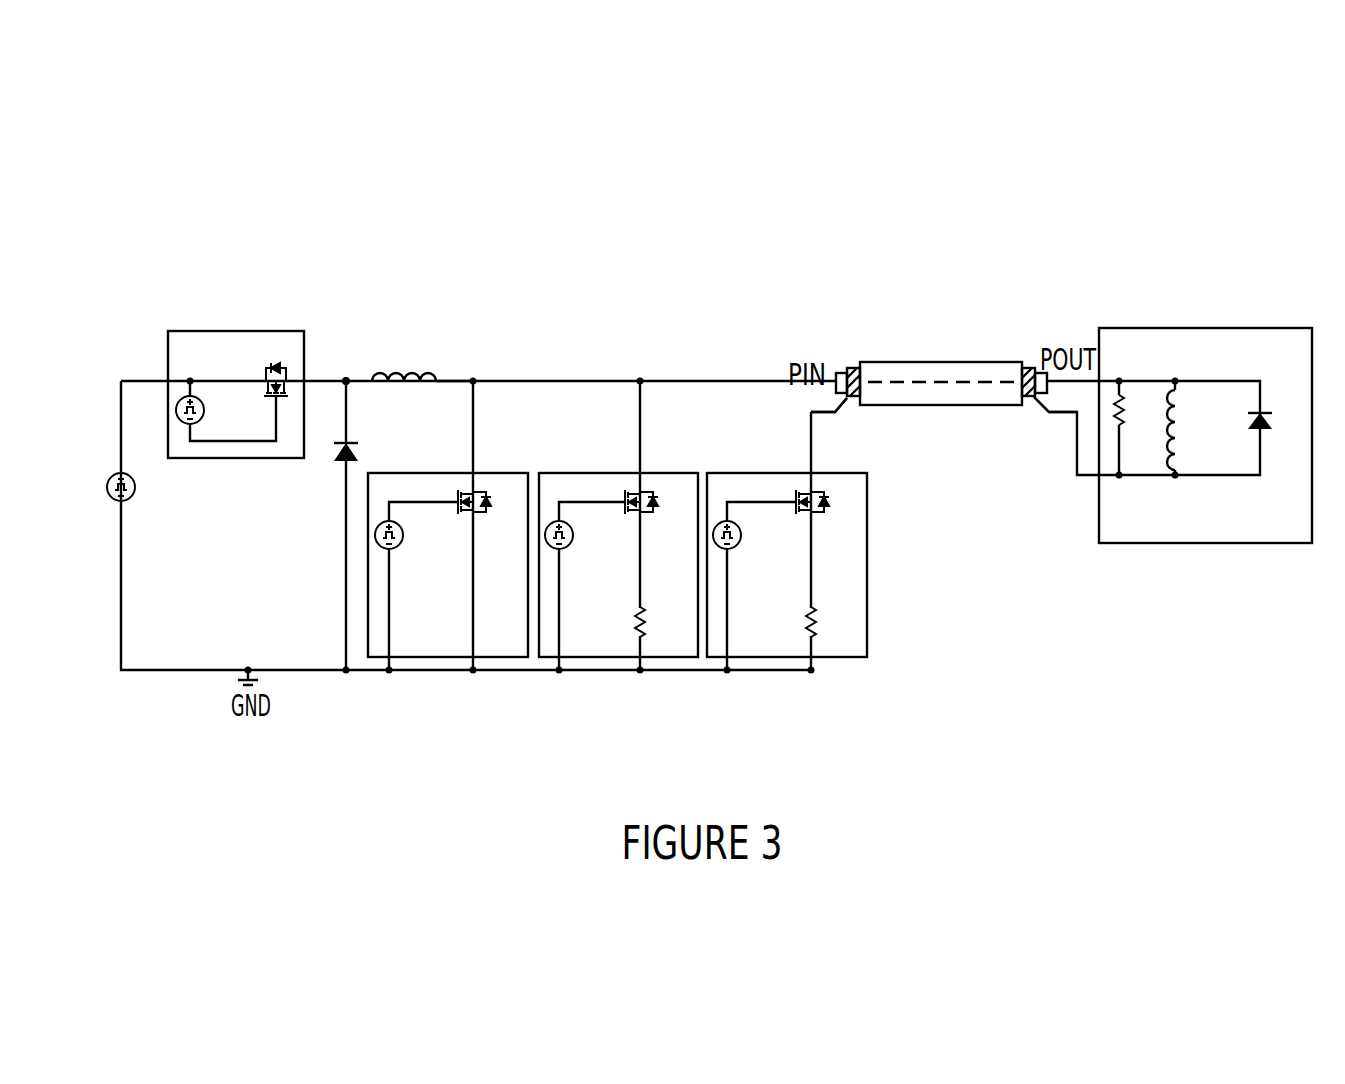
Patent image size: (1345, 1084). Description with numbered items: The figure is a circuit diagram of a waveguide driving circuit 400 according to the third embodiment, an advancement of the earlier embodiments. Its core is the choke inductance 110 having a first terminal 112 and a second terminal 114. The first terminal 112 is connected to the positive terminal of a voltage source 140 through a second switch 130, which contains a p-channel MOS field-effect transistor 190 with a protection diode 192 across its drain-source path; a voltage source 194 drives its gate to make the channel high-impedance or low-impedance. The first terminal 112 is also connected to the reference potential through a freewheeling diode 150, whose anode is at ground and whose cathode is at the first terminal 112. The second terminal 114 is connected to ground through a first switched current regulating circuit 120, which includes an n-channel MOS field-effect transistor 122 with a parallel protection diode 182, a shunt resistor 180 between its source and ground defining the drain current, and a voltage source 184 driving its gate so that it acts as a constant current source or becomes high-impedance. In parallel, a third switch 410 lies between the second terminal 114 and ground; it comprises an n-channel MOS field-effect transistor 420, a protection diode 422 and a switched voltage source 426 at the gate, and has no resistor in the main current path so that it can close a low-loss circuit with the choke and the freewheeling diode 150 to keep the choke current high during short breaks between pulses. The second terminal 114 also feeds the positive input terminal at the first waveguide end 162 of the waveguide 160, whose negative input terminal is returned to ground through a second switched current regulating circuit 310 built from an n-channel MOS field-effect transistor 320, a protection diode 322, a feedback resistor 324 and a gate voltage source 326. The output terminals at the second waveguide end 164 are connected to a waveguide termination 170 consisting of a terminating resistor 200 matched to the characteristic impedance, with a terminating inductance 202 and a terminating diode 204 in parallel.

The waveguide driving circuit 400 is at (523, 285).
The second switch 130 is at (190, 330).
The p-channel MOS field-effect transistor 190 is at (262, 387).
The protection diode 192 is at (282, 360).
The voltage source 194 is at (180, 404).
The first terminal 112 is at (347, 376).
The inductance 110 is at (410, 372).
The second terminal 114 is at (447, 378).
The voltage source 140 is at (106, 486).
The freewheeling diode 150 is at (325, 459).
The third switch 410 is at (442, 658).
The n-channel MOS field-effect transistor 420 is at (458, 492).
The protection diode 422 is at (484, 492).
The switched voltage source 426 is at (392, 550).
The first switched current regulating circuit 120 is at (606, 658).
The n-channel MOS field-effect transistor 122 is at (624, 493).
The protection diode 182 is at (651, 492).
The voltage source 184 is at (563, 550).
The shunt resistor 180 is at (650, 631).
The second switched current regulating circuit 310 is at (868, 628).
The n-channel MOS field-effect transistor 320 is at (800, 520).
The protection diode 322 is at (828, 513).
The voltage source 326 is at (732, 550).
The resistor 324 is at (820, 628).
The waveguide 160 is at (946, 406).
The first waveguide end 162 is at (882, 436).
The second waveguide end 164 is at (1008, 440).
The waveguide termination 170 is at (1195, 545).
The terminating resistor 200 is at (1118, 396).
The terminating inductance 202 is at (1185, 415).
The terminating diode 204 is at (1266, 413).